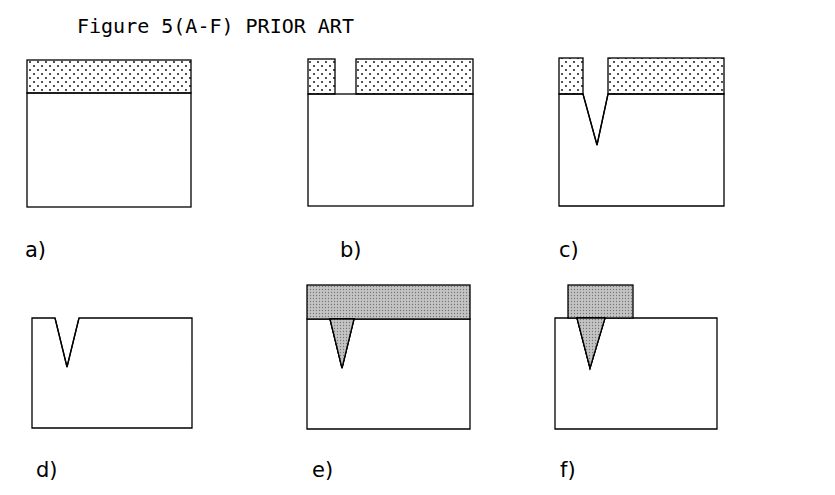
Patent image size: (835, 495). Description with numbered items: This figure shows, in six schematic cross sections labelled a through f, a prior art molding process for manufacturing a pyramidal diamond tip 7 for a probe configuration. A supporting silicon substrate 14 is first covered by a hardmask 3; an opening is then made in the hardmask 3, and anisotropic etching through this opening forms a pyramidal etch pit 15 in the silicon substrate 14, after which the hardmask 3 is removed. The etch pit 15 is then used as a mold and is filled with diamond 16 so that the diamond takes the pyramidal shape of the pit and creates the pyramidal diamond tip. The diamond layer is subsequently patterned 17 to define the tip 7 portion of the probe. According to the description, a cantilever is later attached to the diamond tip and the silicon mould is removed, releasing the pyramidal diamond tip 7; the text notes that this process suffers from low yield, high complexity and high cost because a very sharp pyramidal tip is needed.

The hardmask 3 is at (106, 89).
The supporting silicon substrate 14 is at (122, 161).
The pyramidal etch pit 15 is at (600, 117).
The diamond 16 is at (383, 311).
The patterned diamond layer 17 is at (612, 311).
The pyramidal diamond tip 7 is at (347, 333).